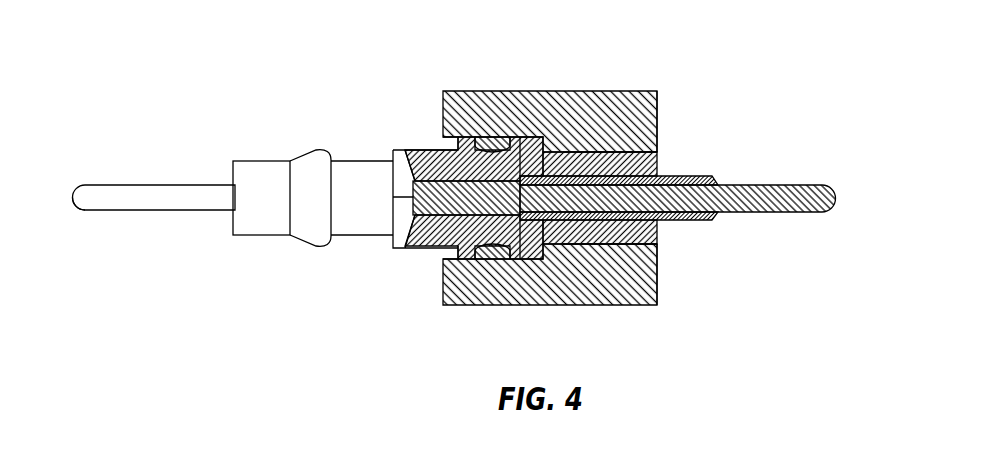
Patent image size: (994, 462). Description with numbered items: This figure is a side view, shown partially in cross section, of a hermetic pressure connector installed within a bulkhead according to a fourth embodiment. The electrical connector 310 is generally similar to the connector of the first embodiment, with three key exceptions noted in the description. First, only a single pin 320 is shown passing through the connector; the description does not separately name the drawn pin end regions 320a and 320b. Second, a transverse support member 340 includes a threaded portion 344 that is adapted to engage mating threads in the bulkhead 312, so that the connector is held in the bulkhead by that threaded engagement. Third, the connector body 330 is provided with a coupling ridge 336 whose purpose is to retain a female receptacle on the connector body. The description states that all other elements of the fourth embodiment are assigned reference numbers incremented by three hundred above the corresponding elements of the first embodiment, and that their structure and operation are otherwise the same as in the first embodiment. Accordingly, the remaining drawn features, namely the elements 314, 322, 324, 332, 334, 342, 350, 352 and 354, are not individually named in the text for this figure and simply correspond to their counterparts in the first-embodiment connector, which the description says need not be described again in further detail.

The electrical connector 310 is at (226, 34).
The bulkhead 312 is at (452, 91).
The second housing block 314 is at (658, 282).
The pin 320 is at (131, 185).
The first conductor end 320a is at (86, 212).
The second conductor end 320b is at (816, 185).
The connector body 322 is at (428, 150).
The center contact 324 is at (518, 250).
The connector body 330 is at (250, 161).
The lower seal ring 332 is at (474, 248).
The upper seal ring 334 is at (490, 137).
The coupling ridge 336 is at (300, 242).
The transverse support member 340 is at (658, 232).
The upper insert 342 is at (560, 150).
The threaded portion 344 is at (658, 123).
The contact pin sleeve 350 is at (688, 176).
The upper shoulder 352 is at (535, 137).
The lower shoulder 354 is at (545, 250).